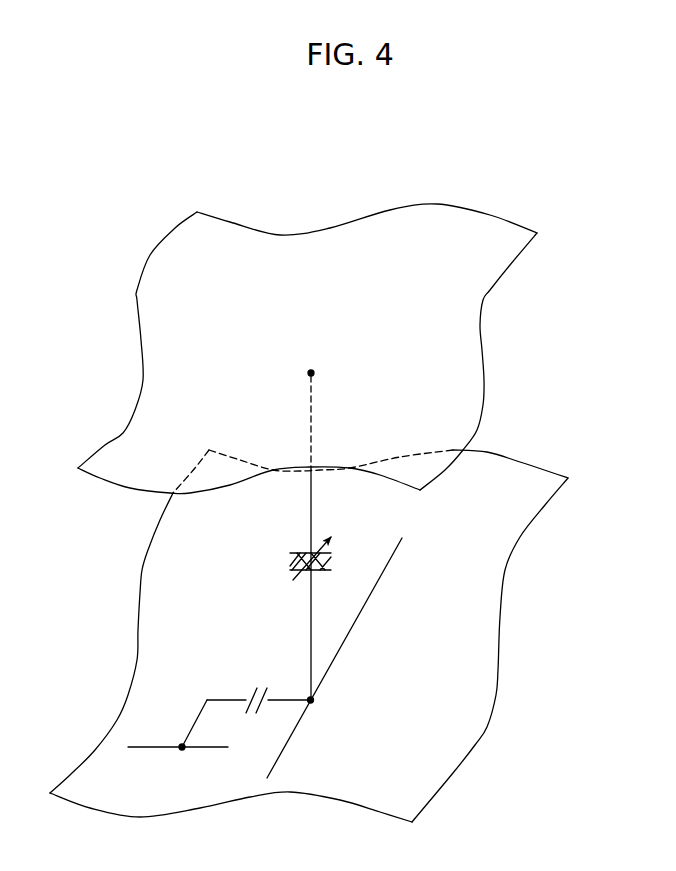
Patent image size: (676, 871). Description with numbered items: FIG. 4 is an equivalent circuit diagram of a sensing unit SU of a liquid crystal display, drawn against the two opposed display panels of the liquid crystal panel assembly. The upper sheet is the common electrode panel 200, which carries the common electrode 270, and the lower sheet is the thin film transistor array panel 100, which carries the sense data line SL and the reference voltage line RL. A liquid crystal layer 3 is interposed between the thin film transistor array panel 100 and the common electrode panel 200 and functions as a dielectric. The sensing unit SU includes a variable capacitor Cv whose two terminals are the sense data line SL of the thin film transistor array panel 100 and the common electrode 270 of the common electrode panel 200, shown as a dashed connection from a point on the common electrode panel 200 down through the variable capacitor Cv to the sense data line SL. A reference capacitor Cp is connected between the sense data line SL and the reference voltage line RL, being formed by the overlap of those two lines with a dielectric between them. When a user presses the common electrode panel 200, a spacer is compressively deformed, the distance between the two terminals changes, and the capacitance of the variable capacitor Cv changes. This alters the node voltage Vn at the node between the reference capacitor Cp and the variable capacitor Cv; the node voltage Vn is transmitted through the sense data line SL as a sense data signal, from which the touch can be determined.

The liquid crystal layer 3 is at (188, 535).
The thin film transistor array panel 100 is at (504, 616).
The common electrode panel 200 is at (319, 349).
The common electrode 270 is at (483, 298).
The sensing unit SU is at (349, 194).
The sense data line SL is at (340, 649).
The variable capacitor Cv is at (298, 558).
The reference capacitor Cp is at (246, 708).
The reference voltage line RL is at (176, 737).
The node voltage Vn is at (326, 703).